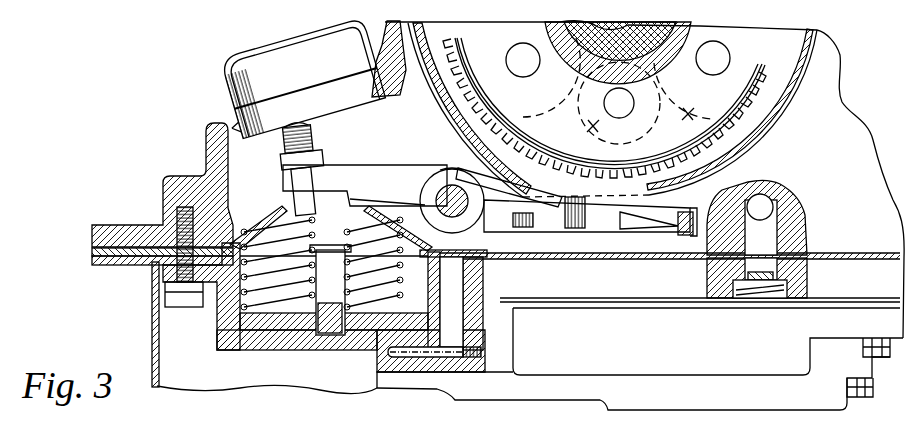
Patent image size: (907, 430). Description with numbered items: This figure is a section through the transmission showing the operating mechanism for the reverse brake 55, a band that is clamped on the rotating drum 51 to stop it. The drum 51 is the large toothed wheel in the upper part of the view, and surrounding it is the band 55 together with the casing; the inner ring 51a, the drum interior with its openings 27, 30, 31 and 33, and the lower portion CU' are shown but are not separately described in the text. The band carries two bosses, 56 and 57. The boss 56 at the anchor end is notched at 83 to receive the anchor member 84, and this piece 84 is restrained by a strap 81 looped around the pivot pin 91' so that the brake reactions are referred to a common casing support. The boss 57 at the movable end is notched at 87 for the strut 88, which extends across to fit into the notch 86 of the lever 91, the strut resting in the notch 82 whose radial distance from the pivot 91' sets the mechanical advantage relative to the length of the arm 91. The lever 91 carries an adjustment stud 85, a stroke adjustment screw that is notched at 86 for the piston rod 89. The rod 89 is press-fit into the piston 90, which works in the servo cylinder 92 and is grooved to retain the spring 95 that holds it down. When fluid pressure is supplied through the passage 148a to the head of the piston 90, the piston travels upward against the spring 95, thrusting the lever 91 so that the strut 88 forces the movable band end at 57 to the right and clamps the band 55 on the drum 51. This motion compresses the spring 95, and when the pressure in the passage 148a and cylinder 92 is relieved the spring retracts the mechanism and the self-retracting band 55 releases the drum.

The gear wheel 27 is at (604, 100).
The central hole 30 is at (601, 103).
The holes 31 is at (523, 72).
The hole 33 is at (692, 80).
The drum 51 is at (762, 113).
The housing inner ring 51a is at (741, 97).
The reverse brake 55 is at (449, 121).
The boss 56 is at (603, 215).
The boss 57 is at (553, 210).
The strap 81 is at (745, 212).
The notch 82 is at (457, 175).
The notch 83 is at (640, 222).
The anchor member 84 is at (685, 237).
The adjustment stud 85 is at (288, 148).
The notch 86 is at (334, 232).
The notch 87 is at (472, 200).
The strut 88 is at (500, 190).
The piston rod 89 is at (334, 333).
The piston 90 is at (300, 330).
The lever 91 is at (365, 166).
The pivot pin 91' is at (397, 187).
The cylinder 92 is at (237, 293).
The spring 95 is at (383, 270).
The passage 148a is at (445, 356).
The clutch unit CU' is at (780, 278).